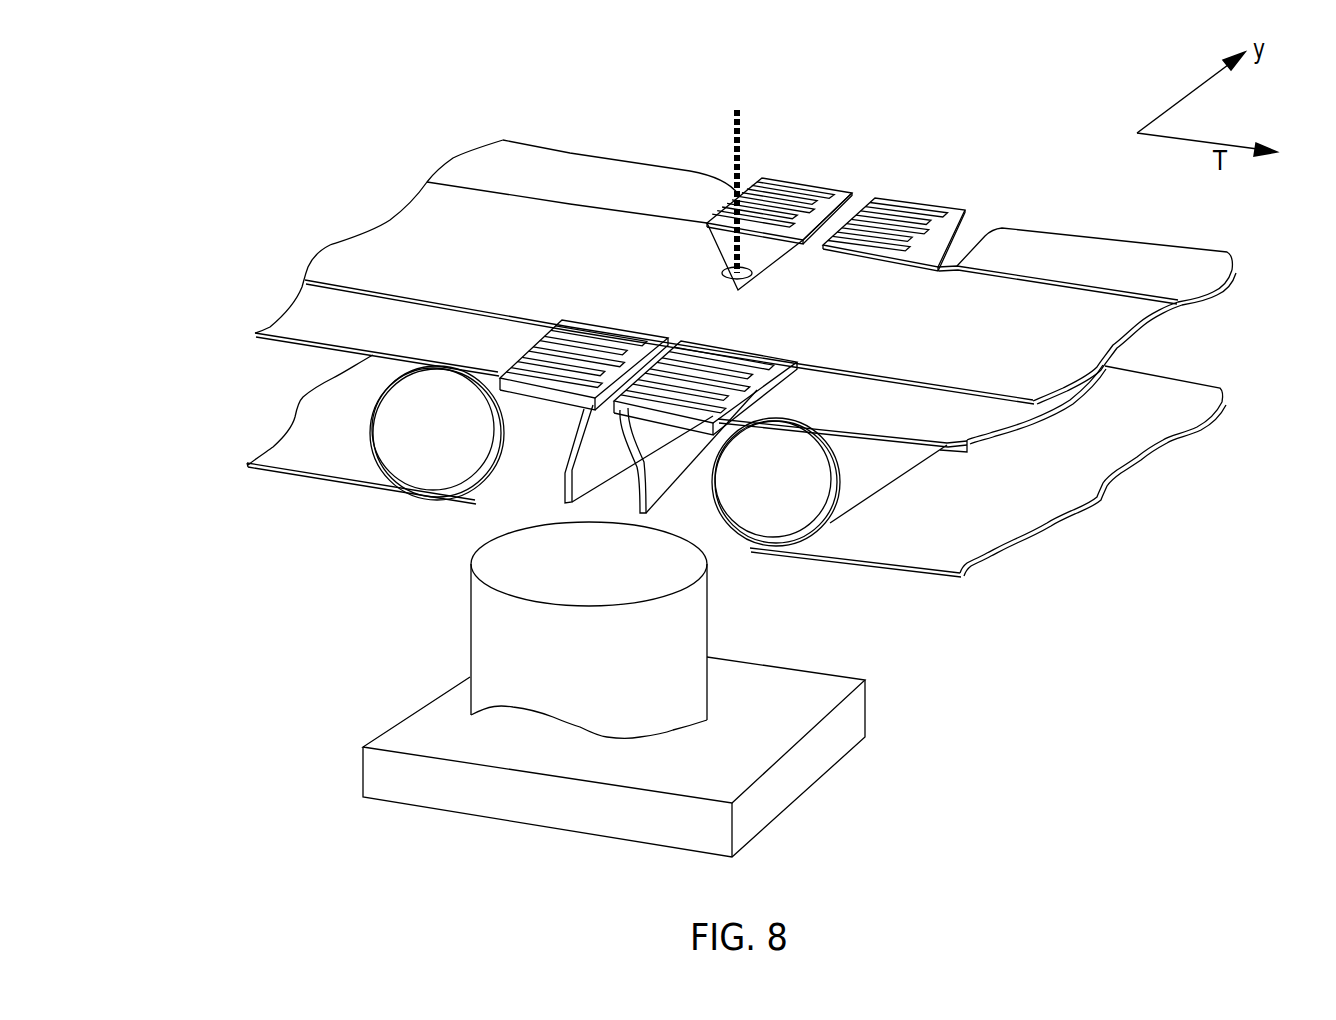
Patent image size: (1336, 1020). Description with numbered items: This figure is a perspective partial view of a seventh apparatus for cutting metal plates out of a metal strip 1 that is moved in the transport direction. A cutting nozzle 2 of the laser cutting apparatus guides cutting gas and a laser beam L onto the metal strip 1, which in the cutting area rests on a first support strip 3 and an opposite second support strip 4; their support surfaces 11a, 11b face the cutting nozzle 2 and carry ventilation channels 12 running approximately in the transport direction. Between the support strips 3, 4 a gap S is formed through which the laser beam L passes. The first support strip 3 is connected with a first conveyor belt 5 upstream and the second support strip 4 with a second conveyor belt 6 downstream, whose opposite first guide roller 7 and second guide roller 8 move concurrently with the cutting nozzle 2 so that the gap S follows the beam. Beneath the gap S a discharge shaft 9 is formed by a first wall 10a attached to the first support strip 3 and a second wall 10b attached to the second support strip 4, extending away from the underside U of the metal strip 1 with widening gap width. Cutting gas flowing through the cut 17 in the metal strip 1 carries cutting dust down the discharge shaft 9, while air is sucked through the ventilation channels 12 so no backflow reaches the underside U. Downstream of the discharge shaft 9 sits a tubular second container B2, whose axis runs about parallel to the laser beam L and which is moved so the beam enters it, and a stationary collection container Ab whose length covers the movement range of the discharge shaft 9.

The metal strip 1 is at (503, 241).
The cutting nozzle 2 is at (705, 275).
The first support strip 3 is at (762, 193).
The second support strip 4 is at (933, 203).
The first conveyor belt 5 is at (307, 457).
The second conveyor belt 6 is at (962, 527).
The first guide roller 7 is at (397, 438).
The second guide roller 8 is at (798, 521).
The discharge shaft 9 is at (625, 507).
The first wall 10a is at (565, 478).
The second wall 10b is at (666, 488).
The support surface 11a is at (552, 337).
The support surface 11b is at (953, 207).
The ventilation channels 12 is at (537, 366).
The cut 17 is at (773, 266).
The laser beam L is at (722, 142).
The gap S is at (863, 200).
The underside U is at (810, 363).
The tubular second container B2 is at (588, 662).
The collection container Ab is at (800, 763).